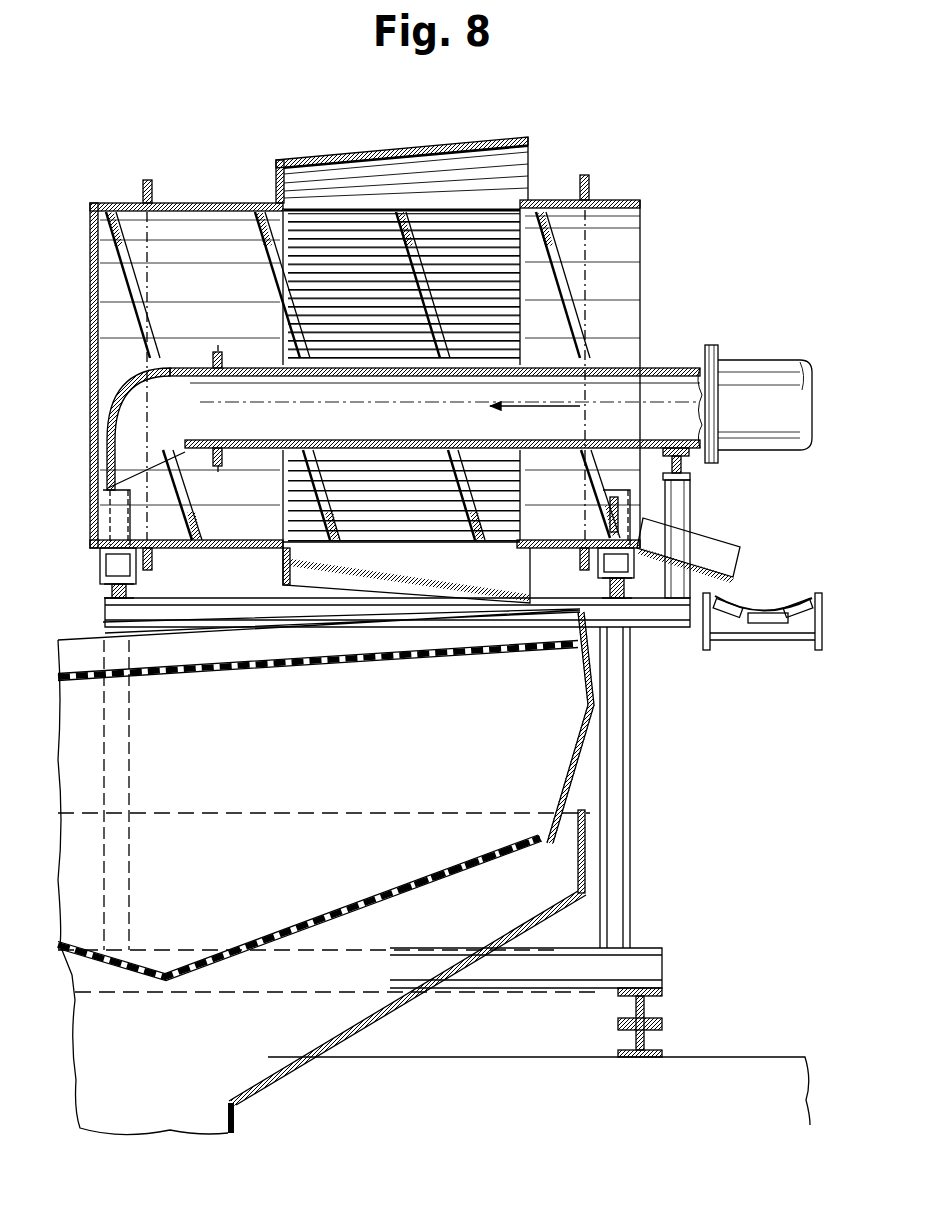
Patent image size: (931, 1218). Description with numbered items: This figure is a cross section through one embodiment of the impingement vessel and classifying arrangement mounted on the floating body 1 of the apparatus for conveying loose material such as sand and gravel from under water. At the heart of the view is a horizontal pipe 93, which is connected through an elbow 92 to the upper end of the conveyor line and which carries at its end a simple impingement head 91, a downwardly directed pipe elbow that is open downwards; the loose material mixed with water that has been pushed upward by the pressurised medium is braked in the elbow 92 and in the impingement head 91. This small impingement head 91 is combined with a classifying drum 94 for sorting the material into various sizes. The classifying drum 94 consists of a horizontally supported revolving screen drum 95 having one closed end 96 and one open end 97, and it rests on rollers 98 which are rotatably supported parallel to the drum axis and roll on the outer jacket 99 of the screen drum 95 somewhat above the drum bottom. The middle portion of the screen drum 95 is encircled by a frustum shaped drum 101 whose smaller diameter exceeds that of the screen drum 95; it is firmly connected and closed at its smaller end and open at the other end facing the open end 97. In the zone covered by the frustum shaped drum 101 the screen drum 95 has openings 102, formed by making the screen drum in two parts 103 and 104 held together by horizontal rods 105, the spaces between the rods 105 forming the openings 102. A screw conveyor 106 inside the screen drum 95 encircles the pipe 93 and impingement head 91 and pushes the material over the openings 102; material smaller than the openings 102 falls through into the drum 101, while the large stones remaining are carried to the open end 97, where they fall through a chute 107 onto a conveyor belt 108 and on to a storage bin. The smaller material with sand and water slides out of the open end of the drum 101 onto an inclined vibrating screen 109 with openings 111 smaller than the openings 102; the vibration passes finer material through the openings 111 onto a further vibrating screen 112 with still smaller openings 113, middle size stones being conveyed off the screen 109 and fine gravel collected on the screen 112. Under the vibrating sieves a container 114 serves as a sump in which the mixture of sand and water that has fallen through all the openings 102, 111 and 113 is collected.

The floating body 1 is at (712, 1075).
The impingement head 91 is at (135, 392).
The elbow 92 is at (770, 360).
The horizontal pipe 93 is at (648, 368).
The classifying drum 94 is at (275, 175).
The screen drum 95 is at (222, 203).
The closed end 96 is at (90, 290).
The open end 97 is at (642, 252).
The rollers 98 is at (108, 500).
The outer jacket 99 is at (118, 203).
The frustum shaped drum 101 is at (430, 138).
The openings 102 is at (493, 345).
The first part of screen drum 103 is at (178, 203).
The second part of screen drum 104 is at (552, 200).
The horizontal rods 105 is at (335, 227).
The screw conveyor 106 is at (135, 300).
The chute 107 is at (700, 540).
The conveyor belt 108 is at (765, 595).
The inclined vibrating screen 109 is at (265, 655).
The openings 111 is at (228, 666).
The further vibrating screen 112 is at (322, 905).
The openings 113 is at (383, 895).
The container 114 is at (405, 1015).